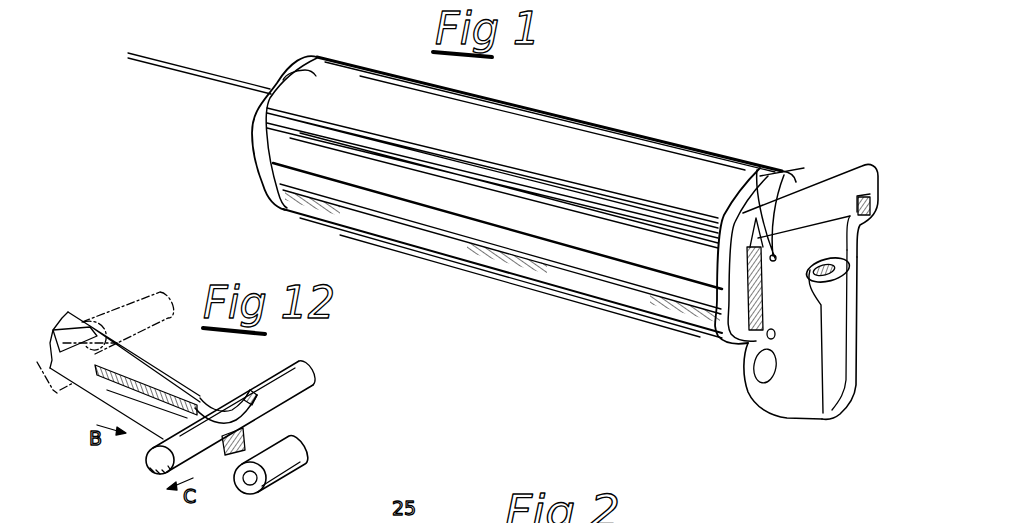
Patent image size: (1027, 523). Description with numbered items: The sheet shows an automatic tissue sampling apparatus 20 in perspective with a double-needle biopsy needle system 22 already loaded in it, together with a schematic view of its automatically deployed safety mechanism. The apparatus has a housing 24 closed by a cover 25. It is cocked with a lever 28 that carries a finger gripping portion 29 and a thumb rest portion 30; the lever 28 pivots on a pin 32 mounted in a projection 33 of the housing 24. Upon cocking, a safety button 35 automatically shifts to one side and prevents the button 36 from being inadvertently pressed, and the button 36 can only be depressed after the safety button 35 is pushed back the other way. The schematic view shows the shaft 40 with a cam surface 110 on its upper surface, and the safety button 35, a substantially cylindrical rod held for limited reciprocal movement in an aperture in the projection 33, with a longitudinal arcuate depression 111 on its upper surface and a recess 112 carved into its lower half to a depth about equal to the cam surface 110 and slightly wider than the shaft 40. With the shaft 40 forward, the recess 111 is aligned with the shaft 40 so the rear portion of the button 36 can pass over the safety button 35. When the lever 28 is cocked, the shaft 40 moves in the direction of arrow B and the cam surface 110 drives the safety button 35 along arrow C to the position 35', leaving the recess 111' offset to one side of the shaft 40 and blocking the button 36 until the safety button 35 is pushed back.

In FIG. 1, the automatic tissue sampling apparatus 20 is at (598, 96).
In FIG. 1, the biopsy needle system 22 is at (183, 57).
In FIG. 1, the housing 24 is at (373, 200).
In FIG. 1, the cover 25 is at (373, 88).
In FIG. 1, the lever 28 is at (807, 363).
In FIG. 1, the finger gripping portion 29 is at (763, 370).
In FIG. 1, the thumb rest portion 30 is at (867, 193).
In FIG. 1, the pin 32 is at (755, 183).
In FIG. 1, the projection 33 is at (782, 197).
In FIG. 1, the safety button 35 is at (736, 294).
In FIG. 12, the safety button 35 is at (205, 426).
In FIG. 1, the button 36 is at (823, 275).
In FIG. 12, the shaft 40 is at (87, 392).
In FIG. 12, the cam surface 110 is at (162, 391).
In FIG. 12, the arcuate depression (recess) 111 is at (226, 407).
In FIG. 12, the recess 112 is at (264, 421).
In FIG. 12, the safety button in safety position 35' is at (128, 303).
In FIG. 12, the recess in offset position 111' is at (84, 309).